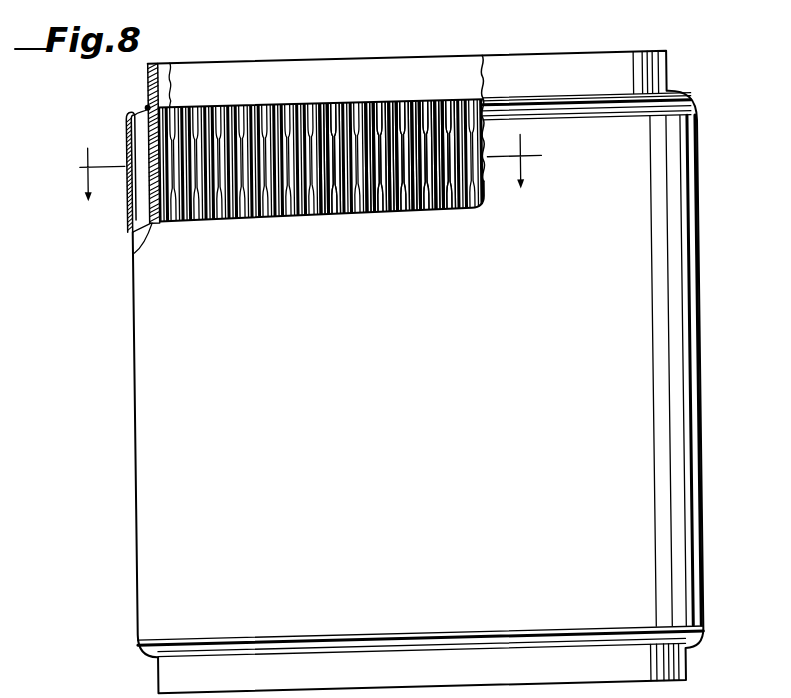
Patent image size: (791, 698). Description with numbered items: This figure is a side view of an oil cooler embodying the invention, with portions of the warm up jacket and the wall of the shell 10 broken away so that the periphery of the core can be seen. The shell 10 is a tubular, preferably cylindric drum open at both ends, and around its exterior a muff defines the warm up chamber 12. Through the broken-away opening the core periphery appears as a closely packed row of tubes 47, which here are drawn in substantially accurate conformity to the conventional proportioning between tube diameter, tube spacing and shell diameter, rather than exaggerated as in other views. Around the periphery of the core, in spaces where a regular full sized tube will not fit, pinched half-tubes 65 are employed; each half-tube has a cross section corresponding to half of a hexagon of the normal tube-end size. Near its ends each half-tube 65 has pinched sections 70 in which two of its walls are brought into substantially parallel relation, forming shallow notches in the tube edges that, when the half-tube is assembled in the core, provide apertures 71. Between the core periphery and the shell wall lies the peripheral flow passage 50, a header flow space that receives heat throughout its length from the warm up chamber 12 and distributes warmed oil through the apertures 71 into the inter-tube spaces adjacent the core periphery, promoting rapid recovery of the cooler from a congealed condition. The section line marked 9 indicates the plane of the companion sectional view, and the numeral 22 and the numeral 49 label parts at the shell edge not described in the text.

The section line 9- 9 is at (304, 170).
The shell 10 is at (136, 246).
The warm up chamber 12 is at (136, 121).
The side panel 22 is at (132, 215).
The tubes 47 is at (209, 192).
The edge strip 49 is at (182, 56).
The peripheral flow passage 50 is at (147, 103).
The pinched half-tube 65 is at (424, 205).
The pinched sections 70 is at (338, 133).
The apertures 71 is at (407, 187).